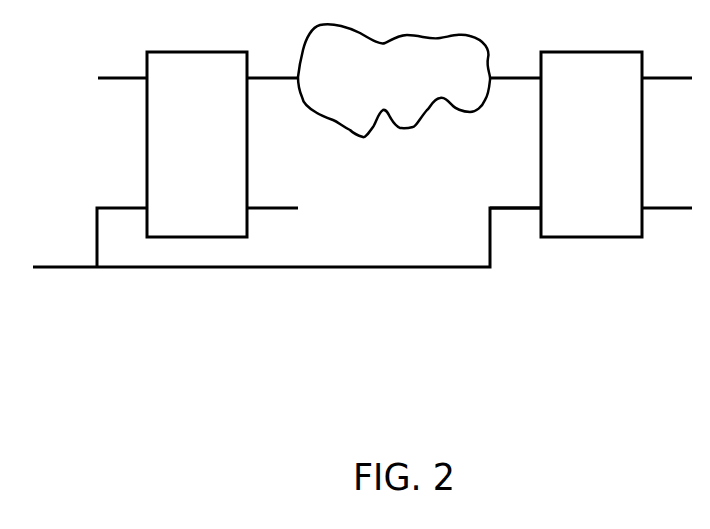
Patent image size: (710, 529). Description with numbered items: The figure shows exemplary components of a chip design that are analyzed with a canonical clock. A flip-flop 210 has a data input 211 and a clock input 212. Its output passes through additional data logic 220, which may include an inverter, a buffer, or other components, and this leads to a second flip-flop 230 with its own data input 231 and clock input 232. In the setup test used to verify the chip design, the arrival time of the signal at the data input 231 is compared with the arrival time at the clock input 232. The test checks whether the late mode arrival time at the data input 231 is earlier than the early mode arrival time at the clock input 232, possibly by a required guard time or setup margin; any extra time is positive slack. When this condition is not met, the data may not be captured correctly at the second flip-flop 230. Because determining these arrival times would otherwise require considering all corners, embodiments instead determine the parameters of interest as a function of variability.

The flip-flop 210 is at (222, 155).
The data input 211 is at (130, 77).
The clock input 212 is at (140, 210).
The additional data logic 220 is at (408, 93).
The second flip-flop 230 is at (615, 155).
The data input 231 is at (523, 80).
The clock input 232 is at (517, 207).